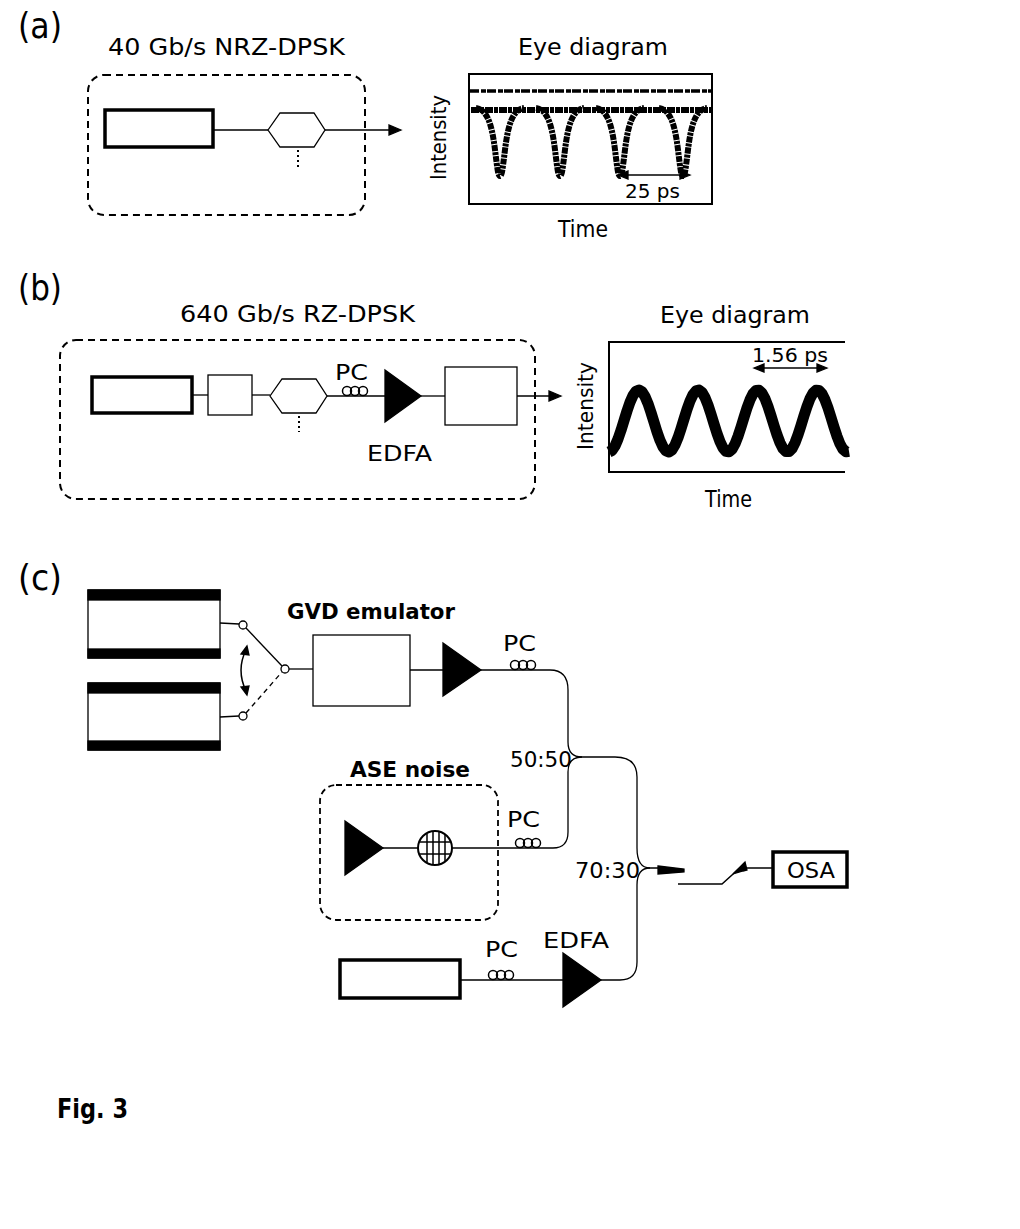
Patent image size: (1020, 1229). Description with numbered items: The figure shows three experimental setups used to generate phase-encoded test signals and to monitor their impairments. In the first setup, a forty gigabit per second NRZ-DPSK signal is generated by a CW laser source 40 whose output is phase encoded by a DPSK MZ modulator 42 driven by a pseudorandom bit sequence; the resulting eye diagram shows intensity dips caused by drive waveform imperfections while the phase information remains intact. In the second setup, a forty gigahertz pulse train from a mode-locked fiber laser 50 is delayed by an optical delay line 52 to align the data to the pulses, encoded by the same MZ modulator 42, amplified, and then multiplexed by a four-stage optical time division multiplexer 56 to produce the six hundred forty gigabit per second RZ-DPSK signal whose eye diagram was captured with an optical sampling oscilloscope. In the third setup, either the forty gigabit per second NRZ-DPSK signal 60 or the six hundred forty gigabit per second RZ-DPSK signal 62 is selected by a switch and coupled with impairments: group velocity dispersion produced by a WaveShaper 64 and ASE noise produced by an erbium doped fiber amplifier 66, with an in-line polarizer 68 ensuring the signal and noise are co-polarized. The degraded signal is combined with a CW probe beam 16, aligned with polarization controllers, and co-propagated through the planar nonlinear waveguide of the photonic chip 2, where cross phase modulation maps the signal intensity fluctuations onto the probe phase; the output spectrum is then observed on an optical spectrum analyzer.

The photonic chip 2 is at (706, 886).
The continuous wave beam 16 is at (385, 999).
The CW laser source 40 is at (107, 127).
The DPSK MZ modulator 42 is at (318, 113).
The mode-locked fiber laser 50 is at (105, 378).
The optical delay line 52 is at (215, 375).
The optical time division multiplexer 56 is at (500, 367).
The 40 Gbit/s NRZ-DPSK signal 60 is at (228, 622).
The 640 Gbit/s RZ-DPSK signal 62 is at (236, 721).
The WaveShaper 64 is at (325, 707).
The erbium doped fiber amplifier 66 is at (458, 648).
The in-line polarizer 68 is at (322, 847).